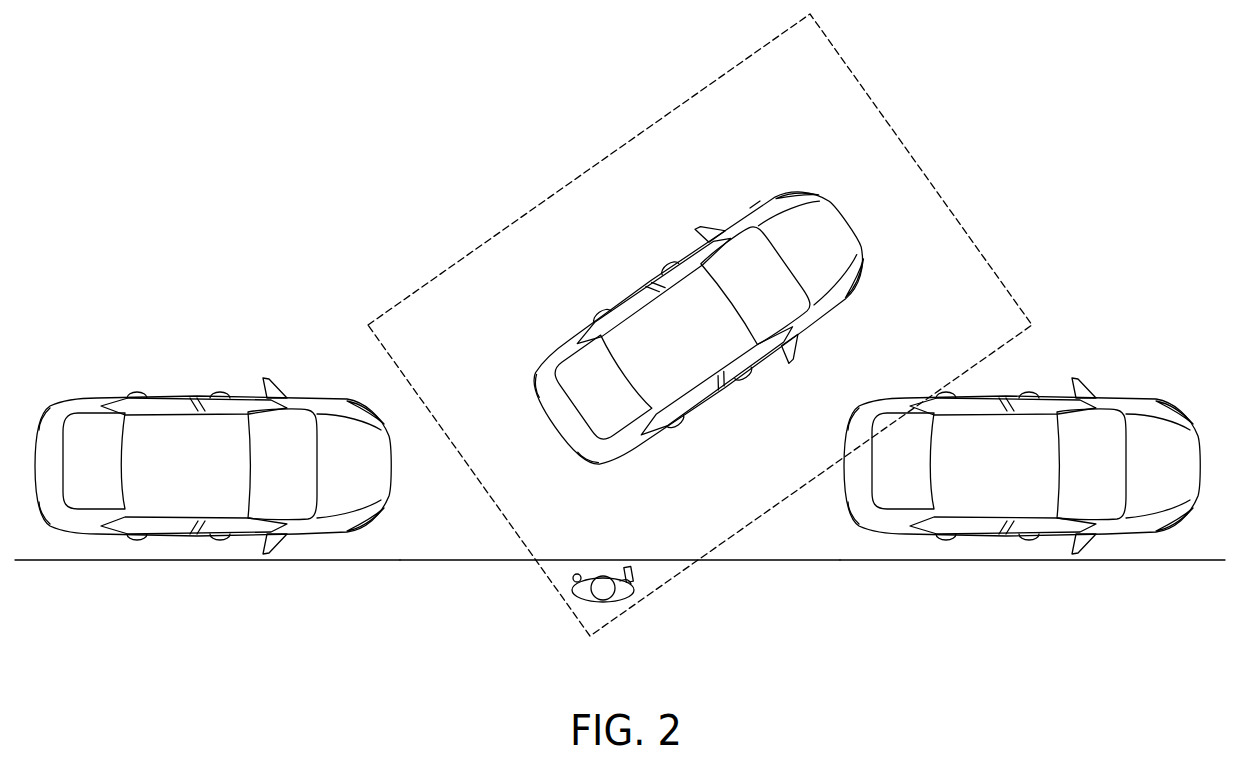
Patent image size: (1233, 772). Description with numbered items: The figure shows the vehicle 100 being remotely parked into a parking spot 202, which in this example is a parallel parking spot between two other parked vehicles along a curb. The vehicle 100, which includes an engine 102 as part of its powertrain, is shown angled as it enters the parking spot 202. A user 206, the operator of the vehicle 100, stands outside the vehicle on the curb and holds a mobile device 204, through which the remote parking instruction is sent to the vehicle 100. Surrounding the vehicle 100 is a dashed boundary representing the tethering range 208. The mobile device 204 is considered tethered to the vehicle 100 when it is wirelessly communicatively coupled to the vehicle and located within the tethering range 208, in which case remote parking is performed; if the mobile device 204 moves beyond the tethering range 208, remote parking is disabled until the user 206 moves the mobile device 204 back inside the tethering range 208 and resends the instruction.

The vehicle 100 is at (848, 220).
The engine 102 is at (754, 203).
The parking spot 202 is at (636, 512).
The mobile device 204 is at (632, 568).
The user 206 is at (583, 602).
The tethering range 208 is at (887, 121).